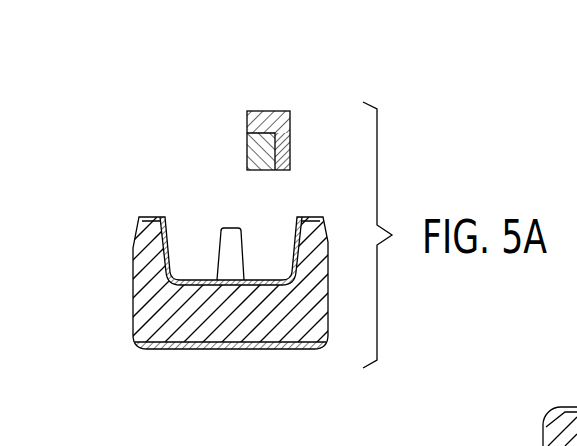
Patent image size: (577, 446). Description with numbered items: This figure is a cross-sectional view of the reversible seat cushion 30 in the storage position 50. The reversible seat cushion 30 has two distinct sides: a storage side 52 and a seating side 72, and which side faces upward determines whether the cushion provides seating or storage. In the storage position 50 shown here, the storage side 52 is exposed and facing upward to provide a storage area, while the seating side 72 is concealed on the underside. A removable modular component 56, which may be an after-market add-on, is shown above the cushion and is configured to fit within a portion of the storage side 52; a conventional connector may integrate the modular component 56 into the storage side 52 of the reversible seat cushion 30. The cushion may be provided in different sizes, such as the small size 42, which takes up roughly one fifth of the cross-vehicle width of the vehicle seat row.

The reversible seat cushion 30 is at (116, 350).
The small size 42 is at (112, 271).
The storage position 50 is at (112, 237).
The storage side 52 is at (151, 216).
The modular component 56 is at (263, 111).
The seating side 72 is at (170, 349).